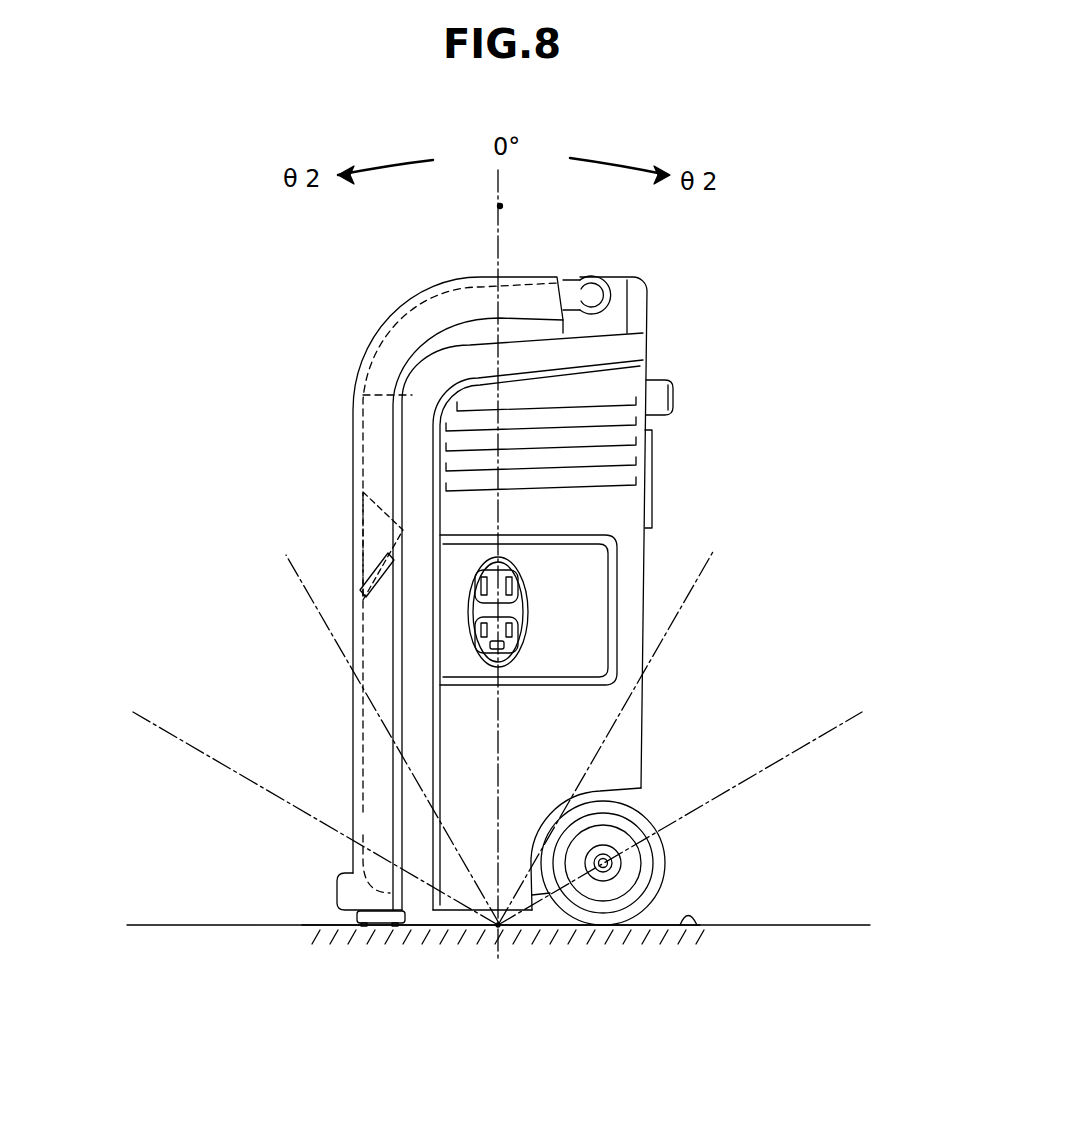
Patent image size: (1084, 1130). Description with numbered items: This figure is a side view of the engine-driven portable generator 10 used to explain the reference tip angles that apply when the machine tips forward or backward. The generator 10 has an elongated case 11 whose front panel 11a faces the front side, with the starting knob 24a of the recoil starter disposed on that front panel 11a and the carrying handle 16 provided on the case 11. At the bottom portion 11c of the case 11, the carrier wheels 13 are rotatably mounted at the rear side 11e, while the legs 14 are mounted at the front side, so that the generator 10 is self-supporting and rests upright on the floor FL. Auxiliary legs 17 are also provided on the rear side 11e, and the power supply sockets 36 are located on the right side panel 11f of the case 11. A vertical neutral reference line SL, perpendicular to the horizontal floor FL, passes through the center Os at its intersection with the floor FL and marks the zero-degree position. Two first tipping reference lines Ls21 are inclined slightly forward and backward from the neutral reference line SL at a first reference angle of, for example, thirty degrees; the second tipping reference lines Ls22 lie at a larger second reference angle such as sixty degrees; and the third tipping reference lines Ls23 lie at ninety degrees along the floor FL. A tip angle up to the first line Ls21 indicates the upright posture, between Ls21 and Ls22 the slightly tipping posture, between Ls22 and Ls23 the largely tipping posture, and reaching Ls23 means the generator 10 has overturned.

The portable generator 10 is at (300, 240).
The case 11 is at (467, 373).
The front panel 11a is at (363, 413).
The bottom portion 11c is at (443, 910).
The rear side 11e is at (647, 468).
The right side panel 11f is at (623, 522).
The carrier wheels 13 is at (622, 916).
The legs 14 is at (383, 916).
The carrying handle 16 is at (368, 358).
The auxiliary legs 17 is at (658, 392).
The starting knob 24a is at (372, 562).
The power supply sockets 36 is at (514, 636).
The neutral reference line SL is at (505, 206).
The center Os is at (501, 930).
The floor FL is at (689, 928).
The first tipping reference lines Ls21 is at (307, 592).
The second tipping reference lines Ls22 is at (172, 736).
The third tipping reference lines Ls23 is at (165, 925).